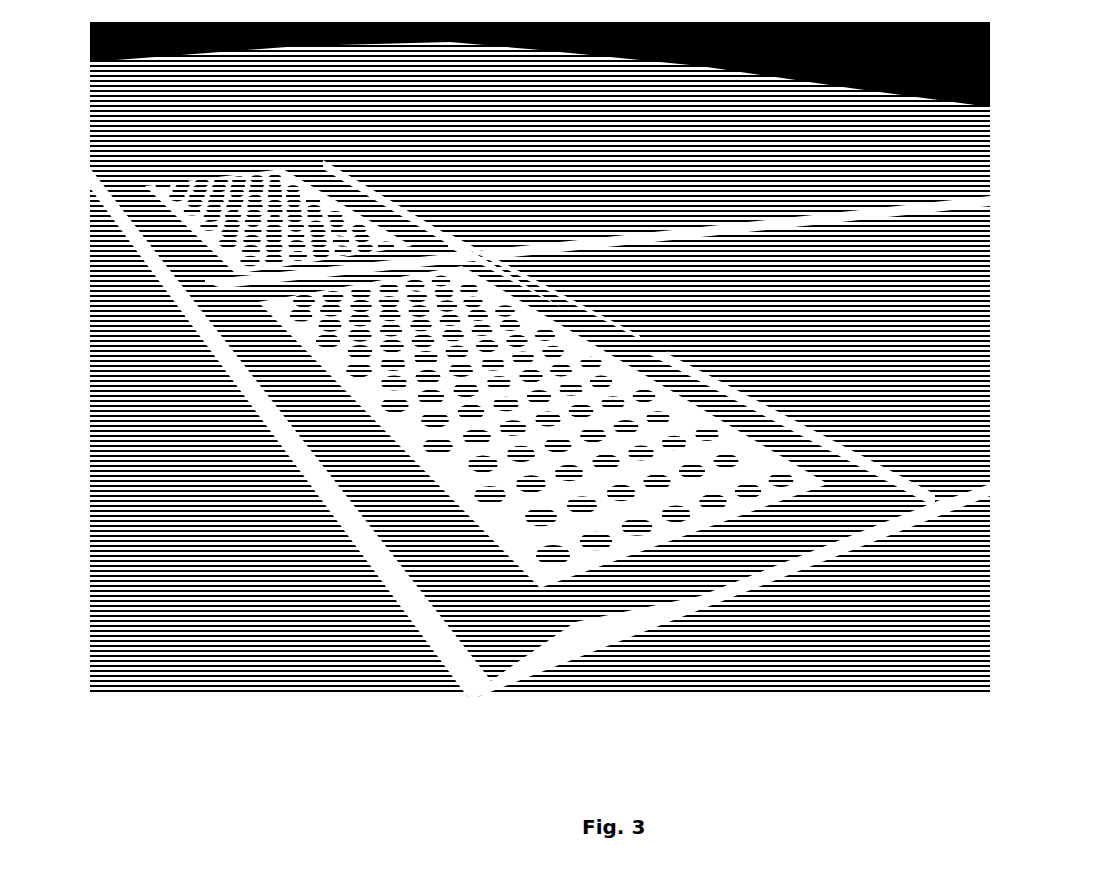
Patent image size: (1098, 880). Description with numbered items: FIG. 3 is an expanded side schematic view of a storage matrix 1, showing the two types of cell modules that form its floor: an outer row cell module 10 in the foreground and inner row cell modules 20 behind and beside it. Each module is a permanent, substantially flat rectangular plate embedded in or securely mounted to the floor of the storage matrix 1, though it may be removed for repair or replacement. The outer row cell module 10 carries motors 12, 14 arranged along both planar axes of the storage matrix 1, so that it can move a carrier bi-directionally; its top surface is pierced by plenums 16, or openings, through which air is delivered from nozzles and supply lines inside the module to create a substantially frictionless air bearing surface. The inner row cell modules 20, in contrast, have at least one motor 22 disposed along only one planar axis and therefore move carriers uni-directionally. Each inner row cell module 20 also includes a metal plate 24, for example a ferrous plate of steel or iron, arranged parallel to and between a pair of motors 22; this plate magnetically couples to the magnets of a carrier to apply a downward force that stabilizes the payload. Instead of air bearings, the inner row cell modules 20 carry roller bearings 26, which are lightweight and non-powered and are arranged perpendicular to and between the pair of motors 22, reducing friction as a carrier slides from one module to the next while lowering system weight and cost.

The storage matrix 1 is at (118, 610).
The outer row cell module 10 is at (369, 537).
The motor 12 is at (722, 553).
The motor 14 is at (343, 452).
The plenum 16 is at (621, 539).
The inner row cell module 20 is at (976, 514).
The motor 22 is at (975, 467).
The metal plate 24 is at (858, 290).
The roller bearing 26 is at (957, 408).